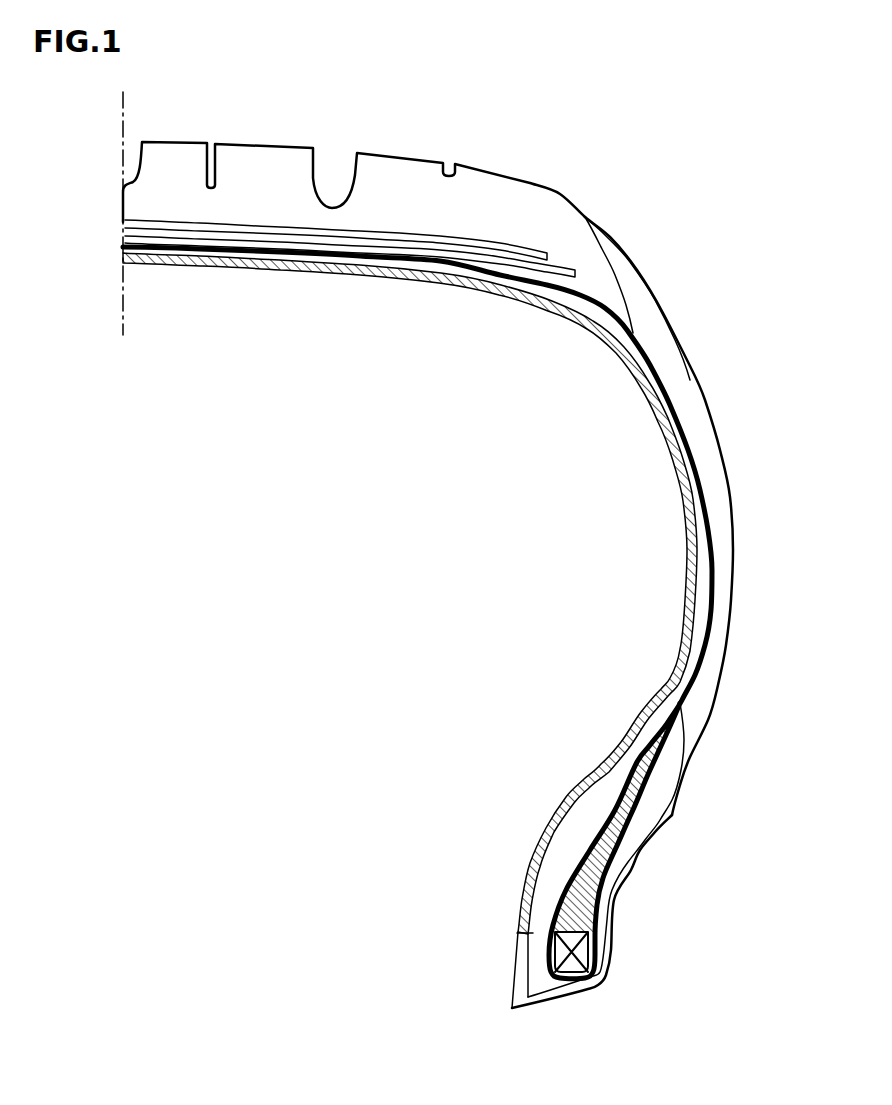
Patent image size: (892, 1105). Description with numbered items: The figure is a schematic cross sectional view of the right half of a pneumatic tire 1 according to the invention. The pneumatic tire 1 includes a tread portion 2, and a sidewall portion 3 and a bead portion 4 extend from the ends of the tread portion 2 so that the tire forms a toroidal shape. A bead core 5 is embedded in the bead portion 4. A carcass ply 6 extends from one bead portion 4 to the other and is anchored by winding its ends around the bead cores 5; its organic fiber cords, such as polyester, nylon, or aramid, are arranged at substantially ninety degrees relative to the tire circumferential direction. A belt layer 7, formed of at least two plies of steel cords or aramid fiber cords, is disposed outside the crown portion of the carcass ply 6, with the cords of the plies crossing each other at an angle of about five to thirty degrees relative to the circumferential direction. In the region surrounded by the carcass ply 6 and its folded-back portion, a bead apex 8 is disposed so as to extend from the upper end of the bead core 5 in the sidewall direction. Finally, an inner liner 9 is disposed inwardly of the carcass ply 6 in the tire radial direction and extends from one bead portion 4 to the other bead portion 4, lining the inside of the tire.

The pneumatic tire 1 is at (271, 132).
The tread portion 2 is at (421, 147).
The sidewall portion 3 is at (743, 497).
The bead portion 4 is at (660, 844).
The bead core 5 is at (571, 964).
The carcass ply 6 is at (697, 665).
The belt layer 7 is at (118, 208).
The bead apex 8 is at (578, 870).
The inner liner 9 is at (660, 700).